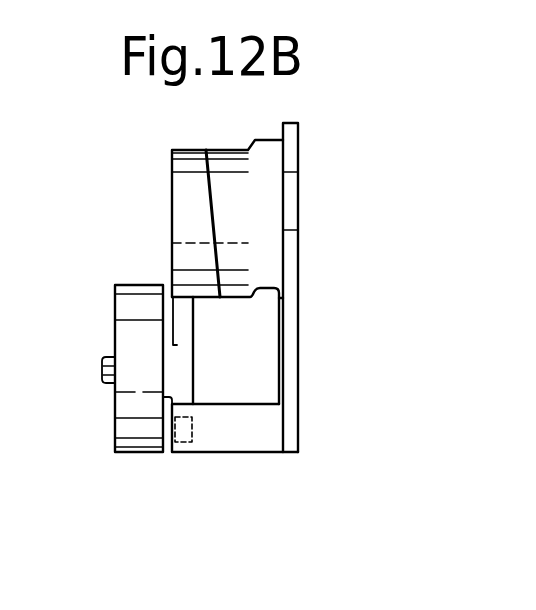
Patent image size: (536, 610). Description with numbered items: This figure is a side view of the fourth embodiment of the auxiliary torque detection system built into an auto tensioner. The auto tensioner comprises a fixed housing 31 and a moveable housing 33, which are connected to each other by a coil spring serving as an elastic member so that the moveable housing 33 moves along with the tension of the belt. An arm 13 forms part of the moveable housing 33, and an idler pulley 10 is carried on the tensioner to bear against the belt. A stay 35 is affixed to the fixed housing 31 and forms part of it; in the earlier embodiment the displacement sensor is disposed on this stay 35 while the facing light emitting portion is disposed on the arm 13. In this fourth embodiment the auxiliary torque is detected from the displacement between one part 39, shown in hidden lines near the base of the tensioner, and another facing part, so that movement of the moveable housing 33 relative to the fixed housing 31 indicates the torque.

The idler pulley 10 is at (127, 328).
The arm 13 is at (187, 383).
The fixed housing 31 is at (263, 215).
The moveable housing 33 is at (172, 217).
The stay 35 is at (253, 432).
The one part 39 is at (188, 442).